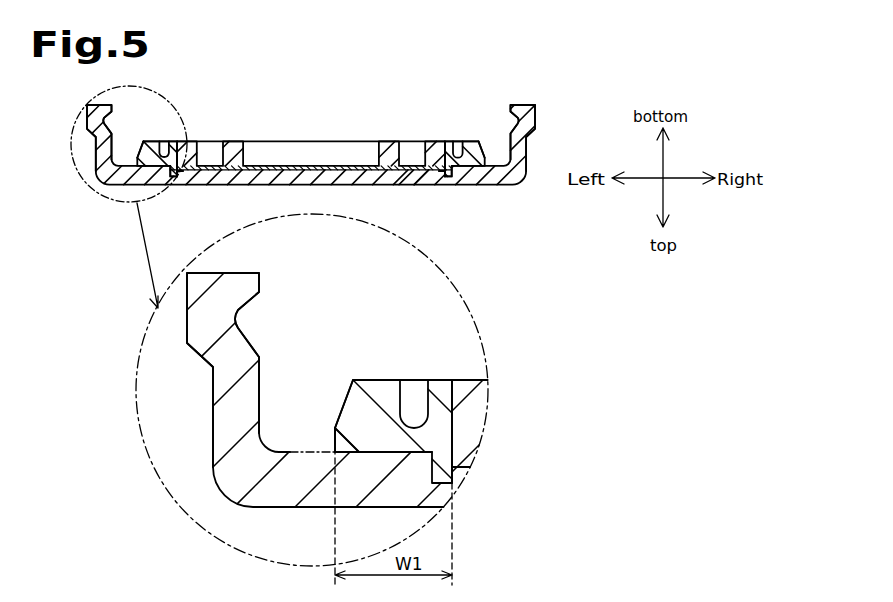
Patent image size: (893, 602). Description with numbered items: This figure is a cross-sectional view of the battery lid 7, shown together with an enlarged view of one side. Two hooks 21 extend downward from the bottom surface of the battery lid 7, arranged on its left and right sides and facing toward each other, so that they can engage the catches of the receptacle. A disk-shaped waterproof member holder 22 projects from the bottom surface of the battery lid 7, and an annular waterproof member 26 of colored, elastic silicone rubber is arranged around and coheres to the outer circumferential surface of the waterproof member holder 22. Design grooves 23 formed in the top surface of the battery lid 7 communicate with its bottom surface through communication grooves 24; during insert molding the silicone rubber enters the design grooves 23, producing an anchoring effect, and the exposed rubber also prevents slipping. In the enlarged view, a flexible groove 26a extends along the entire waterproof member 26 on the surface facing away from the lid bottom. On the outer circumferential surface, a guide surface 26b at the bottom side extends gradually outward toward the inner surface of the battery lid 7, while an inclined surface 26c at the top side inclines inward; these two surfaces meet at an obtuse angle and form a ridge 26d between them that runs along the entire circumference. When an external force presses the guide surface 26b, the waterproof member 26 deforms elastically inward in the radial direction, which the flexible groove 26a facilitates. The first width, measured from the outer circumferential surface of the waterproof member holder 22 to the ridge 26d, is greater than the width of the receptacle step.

The battery lid 7 is at (527, 91).
The hook 21 is at (87, 123).
The waterproof member holder 22 is at (445, 142).
The design groove 23 is at (383, 178).
The communication groove 24 is at (420, 178).
The waterproof member 26 is at (140, 152).
The flexible groove 26a is at (424, 390).
The guide surface 26b is at (348, 392).
The inclined surface 26c is at (340, 448).
The ridge 26d is at (335, 428).